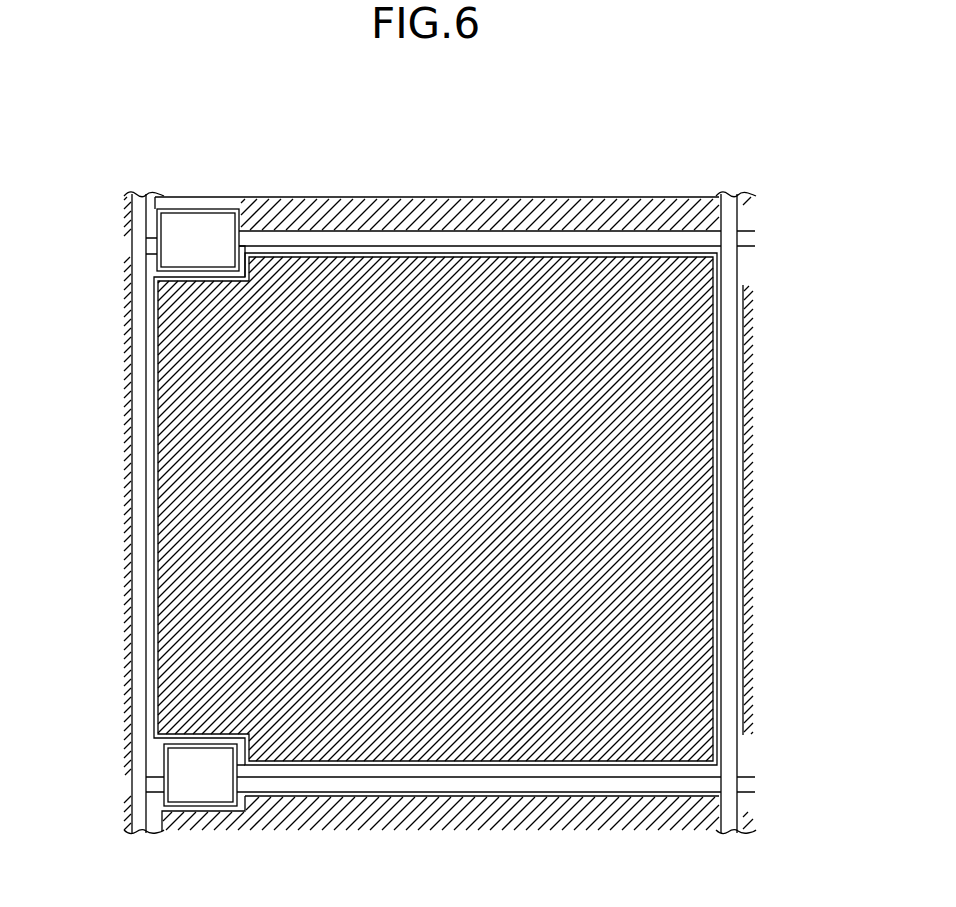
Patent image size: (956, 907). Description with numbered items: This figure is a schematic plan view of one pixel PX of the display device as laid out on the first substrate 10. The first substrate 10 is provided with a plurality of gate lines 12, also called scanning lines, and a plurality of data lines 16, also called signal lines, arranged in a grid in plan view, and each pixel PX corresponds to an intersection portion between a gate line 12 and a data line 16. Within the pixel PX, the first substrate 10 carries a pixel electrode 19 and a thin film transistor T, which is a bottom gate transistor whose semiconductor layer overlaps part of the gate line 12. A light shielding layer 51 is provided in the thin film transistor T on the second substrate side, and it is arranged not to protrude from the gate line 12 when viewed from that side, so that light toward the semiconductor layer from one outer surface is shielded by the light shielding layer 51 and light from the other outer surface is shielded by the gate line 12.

The first substrate 10 is at (752, 148).
The gate line 12 is at (746, 242).
The data line 16 is at (148, 834).
The pixel electrode 19 is at (688, 529).
The light shielding layer 51 is at (200, 773).
The pixel PX is at (610, 300).
The thin film transistor T is at (212, 818).